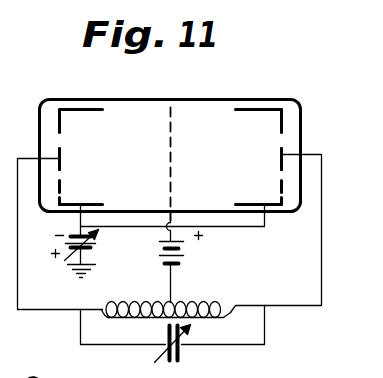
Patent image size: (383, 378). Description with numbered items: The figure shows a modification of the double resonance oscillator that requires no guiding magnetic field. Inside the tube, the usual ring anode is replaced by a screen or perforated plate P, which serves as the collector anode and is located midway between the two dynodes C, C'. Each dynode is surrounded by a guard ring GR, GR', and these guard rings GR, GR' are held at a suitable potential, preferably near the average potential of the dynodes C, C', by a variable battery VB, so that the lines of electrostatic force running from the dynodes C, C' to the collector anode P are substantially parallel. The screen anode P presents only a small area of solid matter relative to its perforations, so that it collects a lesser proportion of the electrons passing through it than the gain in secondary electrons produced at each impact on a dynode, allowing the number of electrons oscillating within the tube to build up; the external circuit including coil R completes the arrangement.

The guard ring GR is at (55, 157).
The guard ring GR' is at (285, 157).
The dynode C is at (73, 158).
The dynode C' is at (265, 157).
The screen or perforated plate P is at (171, 138).
The variable battery VB is at (94, 245).
The resonant coil R is at (244, 318).